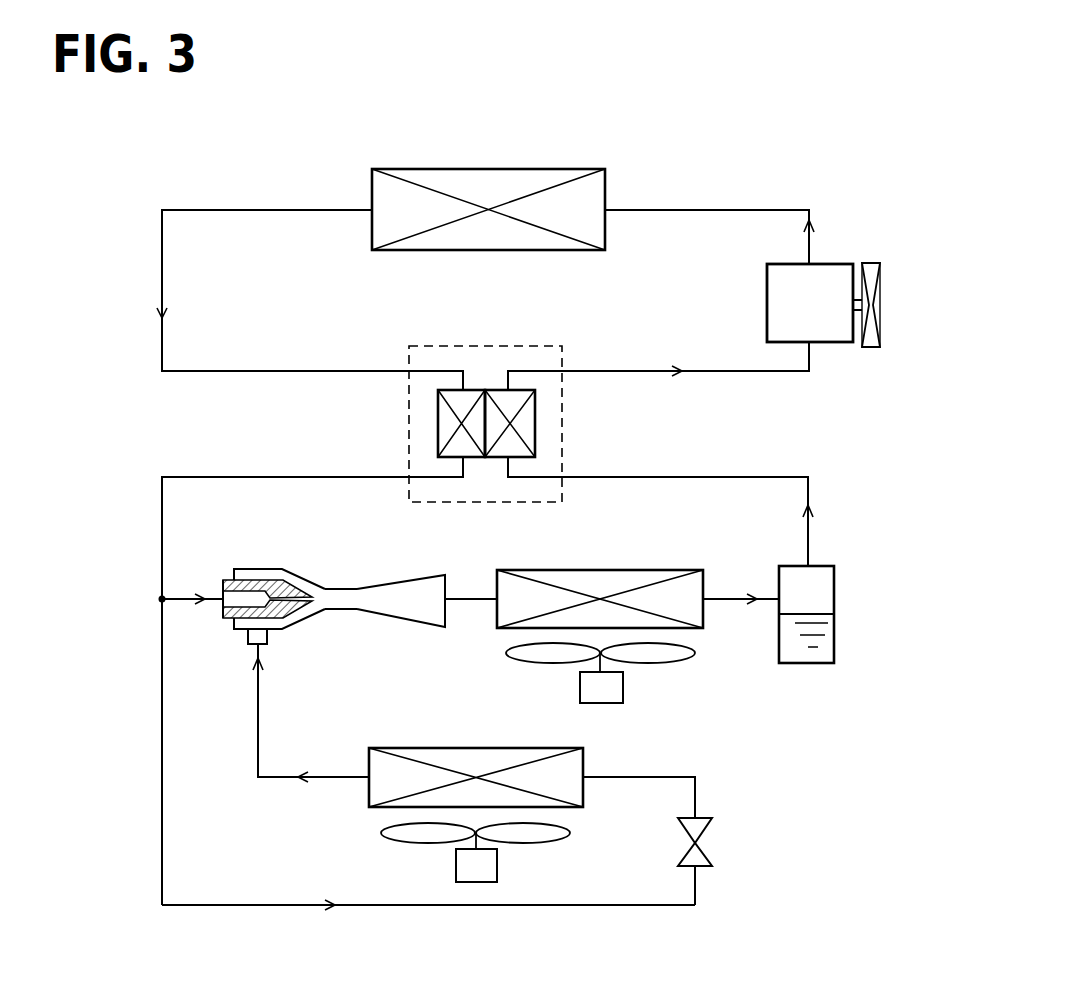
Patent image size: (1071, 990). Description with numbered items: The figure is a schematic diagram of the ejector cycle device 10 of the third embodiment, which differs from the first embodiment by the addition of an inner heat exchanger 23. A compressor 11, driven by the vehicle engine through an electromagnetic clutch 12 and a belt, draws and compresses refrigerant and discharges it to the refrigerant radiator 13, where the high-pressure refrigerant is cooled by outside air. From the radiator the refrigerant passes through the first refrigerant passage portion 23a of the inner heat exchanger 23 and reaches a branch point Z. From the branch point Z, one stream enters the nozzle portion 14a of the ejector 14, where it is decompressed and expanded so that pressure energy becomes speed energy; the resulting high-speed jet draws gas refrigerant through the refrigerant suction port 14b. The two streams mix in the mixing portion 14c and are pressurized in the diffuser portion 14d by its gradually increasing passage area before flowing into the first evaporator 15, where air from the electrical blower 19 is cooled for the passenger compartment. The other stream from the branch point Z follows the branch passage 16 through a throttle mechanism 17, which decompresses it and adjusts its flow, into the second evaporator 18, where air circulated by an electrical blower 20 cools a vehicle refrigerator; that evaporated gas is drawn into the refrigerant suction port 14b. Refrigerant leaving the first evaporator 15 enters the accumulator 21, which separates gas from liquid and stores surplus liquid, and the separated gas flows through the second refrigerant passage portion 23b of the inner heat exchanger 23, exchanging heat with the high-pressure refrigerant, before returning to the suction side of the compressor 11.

The ejector cycle device 10 is at (685, 178).
The compressor 11 is at (838, 264).
The electromagnetic clutch 12 is at (884, 264).
The refrigerant radiator 13 is at (556, 169).
The ejector 14 is at (333, 600).
The nozzle portion 14a is at (279, 581).
The refrigerant suction port 14b is at (244, 637).
The mixing portion 14c is at (358, 590).
The diffuser portion 14d is at (438, 590).
The first evaporator 15 is at (660, 571).
The branch passage 16 is at (205, 907).
The throttle mechanism 17 is at (712, 857).
The second evaporator 18 is at (415, 748).
The electrical blower 19 is at (695, 655).
The electrical blower 20 is at (569, 836).
The accumulator 21 is at (838, 592).
The inner heat exchanger 23 is at (471, 424).
The first refrigerant passage portion 23a is at (438, 438).
The second refrigerant passage portion 23b is at (535, 438).
The branch point Z is at (158, 598).